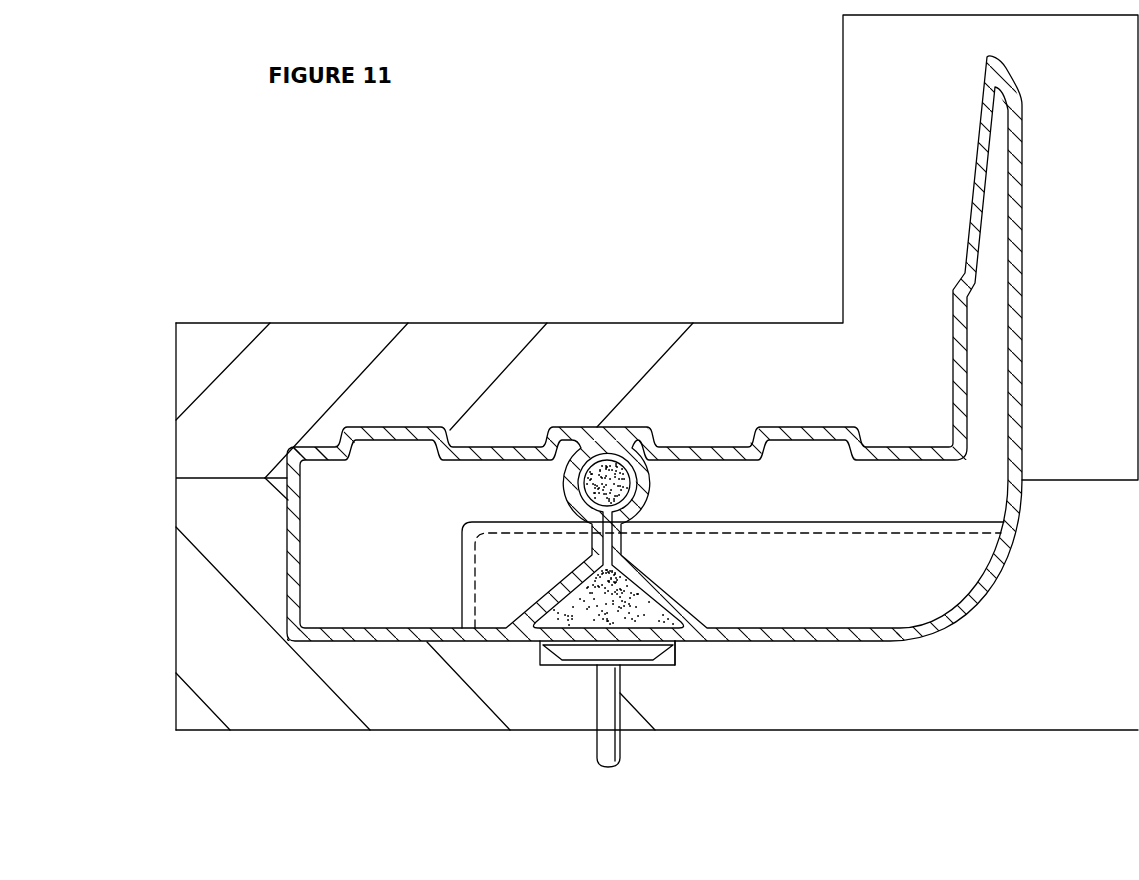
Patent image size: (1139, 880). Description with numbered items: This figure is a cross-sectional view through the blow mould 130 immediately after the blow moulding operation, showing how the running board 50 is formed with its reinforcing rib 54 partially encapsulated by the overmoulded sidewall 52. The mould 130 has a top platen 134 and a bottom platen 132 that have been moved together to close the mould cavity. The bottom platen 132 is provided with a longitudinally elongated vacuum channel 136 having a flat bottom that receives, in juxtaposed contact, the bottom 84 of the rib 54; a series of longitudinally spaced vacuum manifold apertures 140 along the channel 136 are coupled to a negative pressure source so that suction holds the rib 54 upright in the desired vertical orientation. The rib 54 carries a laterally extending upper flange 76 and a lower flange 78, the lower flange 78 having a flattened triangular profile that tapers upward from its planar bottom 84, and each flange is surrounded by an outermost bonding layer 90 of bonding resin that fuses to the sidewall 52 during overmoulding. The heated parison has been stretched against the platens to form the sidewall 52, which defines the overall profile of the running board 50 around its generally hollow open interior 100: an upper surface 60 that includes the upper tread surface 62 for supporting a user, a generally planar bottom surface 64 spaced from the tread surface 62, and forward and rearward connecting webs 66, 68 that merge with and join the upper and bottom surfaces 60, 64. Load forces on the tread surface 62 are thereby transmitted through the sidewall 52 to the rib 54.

The mould 130 is at (866, 193).
The top platen 134 is at (455, 371).
The bottom platen 132 is at (755, 703).
The running board 50 is at (1026, 335).
The sidewall 52 is at (704, 437).
The upper tread surface 62 is at (493, 447).
The forward connecting web 66 is at (287, 507).
The bottom surface 64 is at (828, 642).
The upper surface 60 is at (907, 447).
The rearward connecting web 68 is at (1024, 290).
The upper flange 76 is at (612, 483).
The bonding layer 90 is at (669, 616).
The lower flange 78 is at (563, 611).
The reinforcing rib 54 is at (625, 599).
The bottom 84 is at (557, 642).
The vacuum channel 136 is at (688, 643).
The vacuum manifold apertures 140 is at (597, 666).
The hollow open interior 100 is at (397, 546).